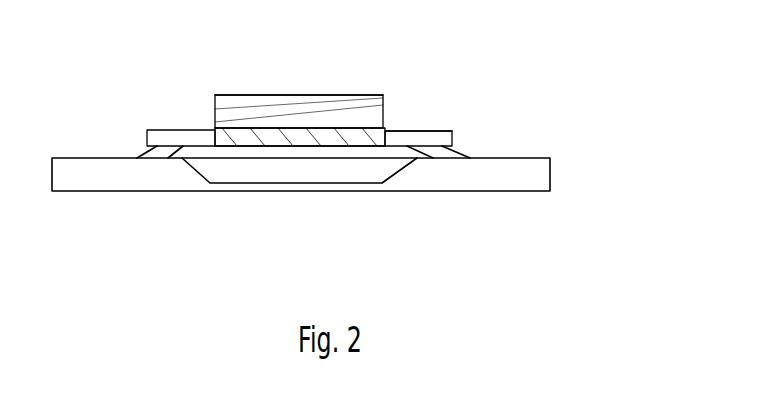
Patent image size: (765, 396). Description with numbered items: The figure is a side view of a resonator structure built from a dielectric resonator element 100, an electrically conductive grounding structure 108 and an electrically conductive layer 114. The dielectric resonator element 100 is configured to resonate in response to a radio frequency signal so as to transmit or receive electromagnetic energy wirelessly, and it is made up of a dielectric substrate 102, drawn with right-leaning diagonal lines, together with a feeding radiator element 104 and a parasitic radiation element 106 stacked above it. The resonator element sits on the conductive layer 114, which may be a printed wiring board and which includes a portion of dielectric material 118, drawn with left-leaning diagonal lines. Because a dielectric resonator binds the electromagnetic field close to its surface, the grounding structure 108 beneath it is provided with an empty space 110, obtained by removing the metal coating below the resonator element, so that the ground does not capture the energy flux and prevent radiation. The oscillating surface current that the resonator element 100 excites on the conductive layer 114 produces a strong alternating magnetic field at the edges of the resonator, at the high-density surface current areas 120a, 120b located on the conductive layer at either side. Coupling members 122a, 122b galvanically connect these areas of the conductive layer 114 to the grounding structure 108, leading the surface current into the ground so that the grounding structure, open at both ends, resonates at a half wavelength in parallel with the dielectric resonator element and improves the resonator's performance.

The dielectric resonator element 100 is at (347, 123).
The dielectric substrate 102 is at (293, 110).
The feeding radiator element 104 is at (325, 93).
The parasitic radiation element 106 is at (218, 93).
The electrically conductive grounding structure 108 is at (527, 193).
The empty space 110 is at (345, 167).
The electrically conductive layer 114 is at (452, 137).
The dielectric material 118 is at (328, 148).
The high-density surface current area 120a is at (213, 128).
The high-density surface current area 120b is at (385, 128).
The coupling member 122a is at (155, 158).
The coupling member 122b is at (440, 158).